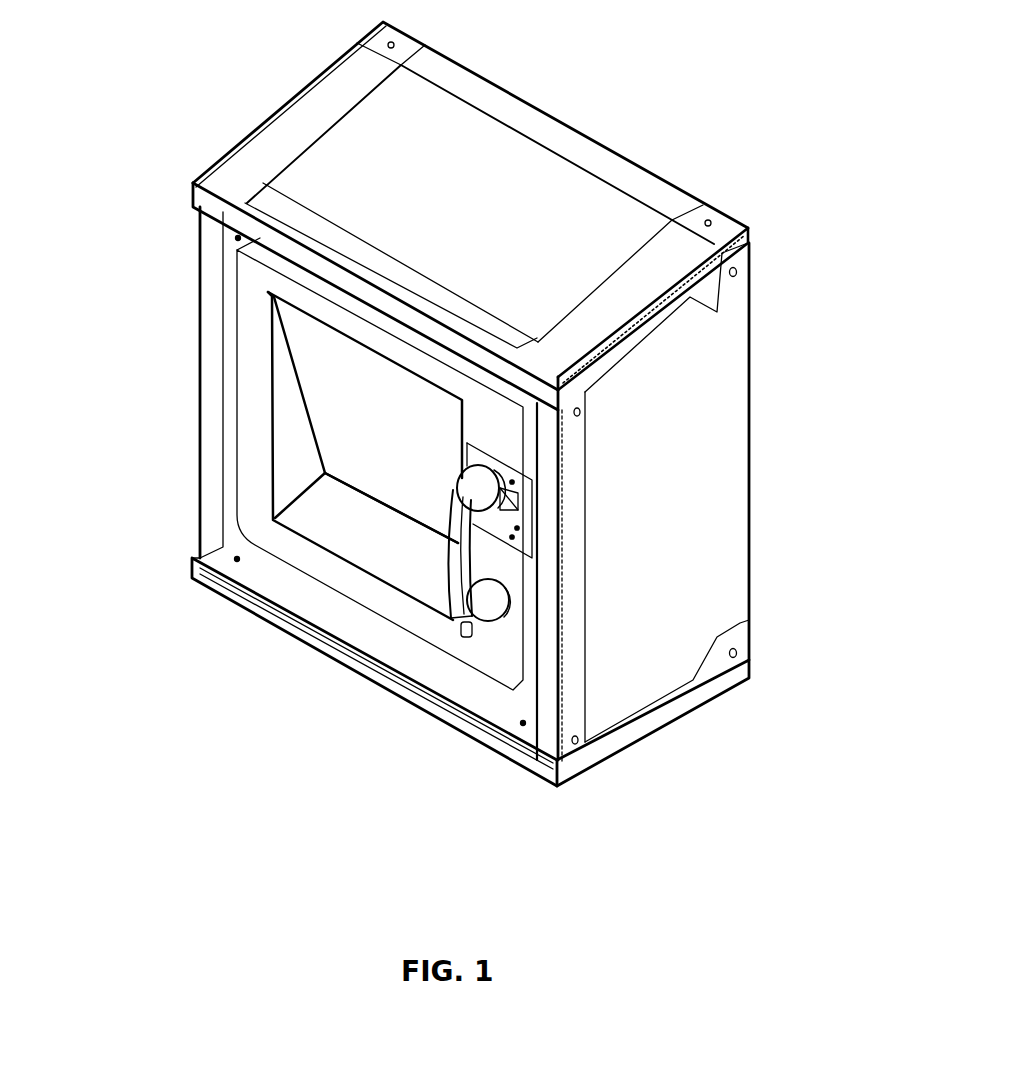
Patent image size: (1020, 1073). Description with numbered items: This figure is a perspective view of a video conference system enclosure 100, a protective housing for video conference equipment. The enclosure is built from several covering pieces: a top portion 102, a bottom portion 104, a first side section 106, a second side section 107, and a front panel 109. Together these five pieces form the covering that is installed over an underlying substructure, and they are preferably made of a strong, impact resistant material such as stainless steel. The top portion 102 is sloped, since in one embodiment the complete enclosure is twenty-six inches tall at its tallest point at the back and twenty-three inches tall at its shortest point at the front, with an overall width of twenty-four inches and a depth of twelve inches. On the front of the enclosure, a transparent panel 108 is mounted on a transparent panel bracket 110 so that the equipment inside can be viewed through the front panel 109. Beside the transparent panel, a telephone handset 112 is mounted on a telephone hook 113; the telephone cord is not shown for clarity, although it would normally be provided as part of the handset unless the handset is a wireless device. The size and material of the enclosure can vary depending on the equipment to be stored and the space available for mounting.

The video conference system enclosure 100 is at (762, 102).
The top portion 102 is at (519, 108).
The bottom portion 104 is at (588, 760).
The first side section 106 is at (727, 377).
The second side section 107 is at (193, 250).
The transparent panel 108 is at (333, 383).
The front panel 109 is at (190, 560).
The transparent panel bracket 110 is at (352, 516).
The telephone handset 112 is at (481, 612).
The telephone hook 113 is at (510, 508).